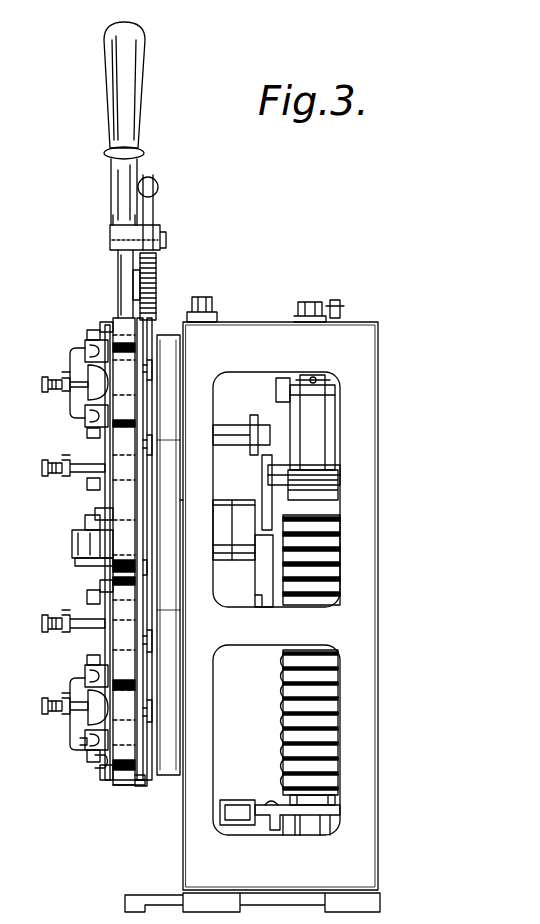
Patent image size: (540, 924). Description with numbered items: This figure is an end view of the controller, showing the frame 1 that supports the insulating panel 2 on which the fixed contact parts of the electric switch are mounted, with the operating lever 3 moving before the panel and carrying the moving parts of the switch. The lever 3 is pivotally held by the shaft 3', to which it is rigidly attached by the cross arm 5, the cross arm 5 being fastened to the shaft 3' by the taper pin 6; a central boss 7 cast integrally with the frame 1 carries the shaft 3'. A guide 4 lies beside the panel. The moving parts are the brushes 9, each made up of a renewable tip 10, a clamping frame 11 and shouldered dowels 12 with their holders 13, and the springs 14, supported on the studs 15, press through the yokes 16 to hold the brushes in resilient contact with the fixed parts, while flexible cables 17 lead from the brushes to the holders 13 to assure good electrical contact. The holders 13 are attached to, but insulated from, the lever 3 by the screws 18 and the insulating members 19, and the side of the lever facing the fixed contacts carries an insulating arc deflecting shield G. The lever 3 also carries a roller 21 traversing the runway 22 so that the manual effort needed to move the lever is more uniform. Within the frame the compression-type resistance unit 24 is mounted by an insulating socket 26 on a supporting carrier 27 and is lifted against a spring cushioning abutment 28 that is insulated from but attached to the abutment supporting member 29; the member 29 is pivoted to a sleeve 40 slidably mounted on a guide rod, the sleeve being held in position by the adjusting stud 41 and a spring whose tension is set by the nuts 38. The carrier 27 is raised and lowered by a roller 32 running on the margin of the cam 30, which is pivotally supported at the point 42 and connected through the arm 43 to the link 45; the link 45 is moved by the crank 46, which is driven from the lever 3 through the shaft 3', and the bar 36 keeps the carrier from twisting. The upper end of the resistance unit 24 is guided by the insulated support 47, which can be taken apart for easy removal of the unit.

The frame 1 is at (378, 392).
The insulating panel 2 is at (142, 551).
The operating lever 3 is at (116, 415).
The shaft 3' is at (76, 544).
The guide 4 is at (187, 512).
The cross arm 5 is at (75, 560).
The taper pin 6 is at (85, 522).
The central boss 7 is at (150, 565).
The brushes 9 is at (95, 458).
The renewable tip 10 is at (165, 710).
The clamping frame 11 is at (103, 766).
The shouldered dowels 12 is at (80, 742).
The holders 13 is at (108, 324).
The springs 14 is at (55, 378).
The studs 15 is at (42, 385).
The yokes 16 is at (70, 408).
The flexible cables 17 is at (85, 345).
The screws 18 is at (94, 542).
The insulating members 19 is at (108, 514).
The roller 21 is at (157, 258).
The runway 22 is at (157, 282).
The resistance unit 24 is at (303, 708).
The insulating sockets 26 is at (266, 803).
The supporting carriers 27 is at (330, 818).
The spring cushioning abutments 28 is at (315, 378).
The abutment supporting members 29 is at (276, 387).
The cam 30 is at (262, 578).
The rollers 32 is at (255, 597).
The bar 36 is at (240, 800).
The nuts 38 is at (327, 308).
The sleeves 40 is at (298, 385).
The adjusting studs 41 is at (342, 310).
The pivot points 42 is at (290, 545).
The arms 43 is at (272, 520).
The link 45 is at (252, 468).
The crank 46 is at (240, 515).
The insulated support 47 is at (330, 472).
The insulating arc deflecting shield G is at (145, 786).